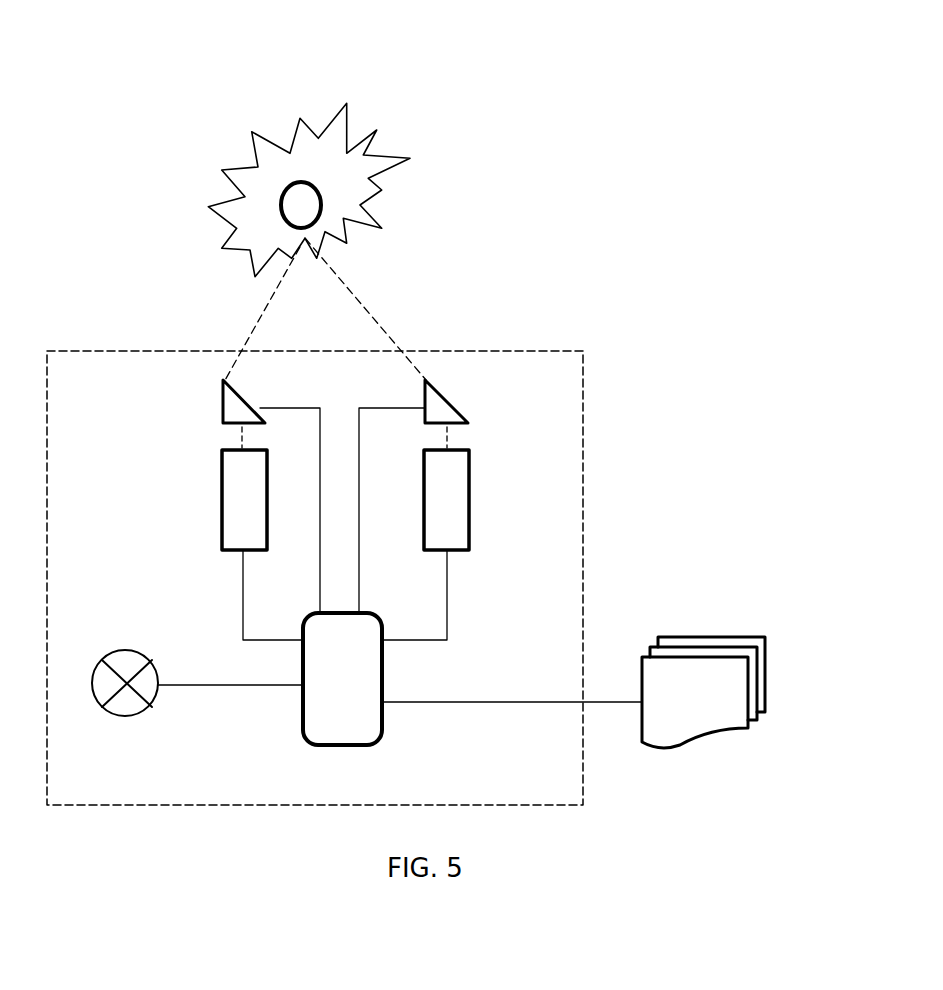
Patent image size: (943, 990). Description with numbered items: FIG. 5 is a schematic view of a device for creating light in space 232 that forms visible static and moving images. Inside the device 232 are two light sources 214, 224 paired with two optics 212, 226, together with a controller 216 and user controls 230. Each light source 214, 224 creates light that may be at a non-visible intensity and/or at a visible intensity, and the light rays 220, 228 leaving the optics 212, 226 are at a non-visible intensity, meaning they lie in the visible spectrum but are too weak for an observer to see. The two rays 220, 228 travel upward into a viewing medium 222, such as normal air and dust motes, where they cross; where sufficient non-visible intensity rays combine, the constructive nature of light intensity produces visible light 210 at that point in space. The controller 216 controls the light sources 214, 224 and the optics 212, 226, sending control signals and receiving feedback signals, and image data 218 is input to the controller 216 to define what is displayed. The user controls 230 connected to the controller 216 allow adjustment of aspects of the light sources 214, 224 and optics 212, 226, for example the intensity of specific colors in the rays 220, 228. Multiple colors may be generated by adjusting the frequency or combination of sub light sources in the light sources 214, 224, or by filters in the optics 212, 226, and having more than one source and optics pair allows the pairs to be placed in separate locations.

The visible light 210 is at (287, 180).
The viewing medium 222 is at (377, 130).
The non-visible light ray 220 is at (260, 313).
The non-visible light ray 228 is at (380, 298).
The optics 212 is at (223, 405).
The optics 226 is at (450, 405).
The light source 214 is at (220, 502).
The light source 224 is at (470, 505).
The controller 216 is at (307, 745).
The user controls 230 is at (117, 648).
The device for creating light in space 232 is at (583, 400).
The image data 218 is at (728, 637).